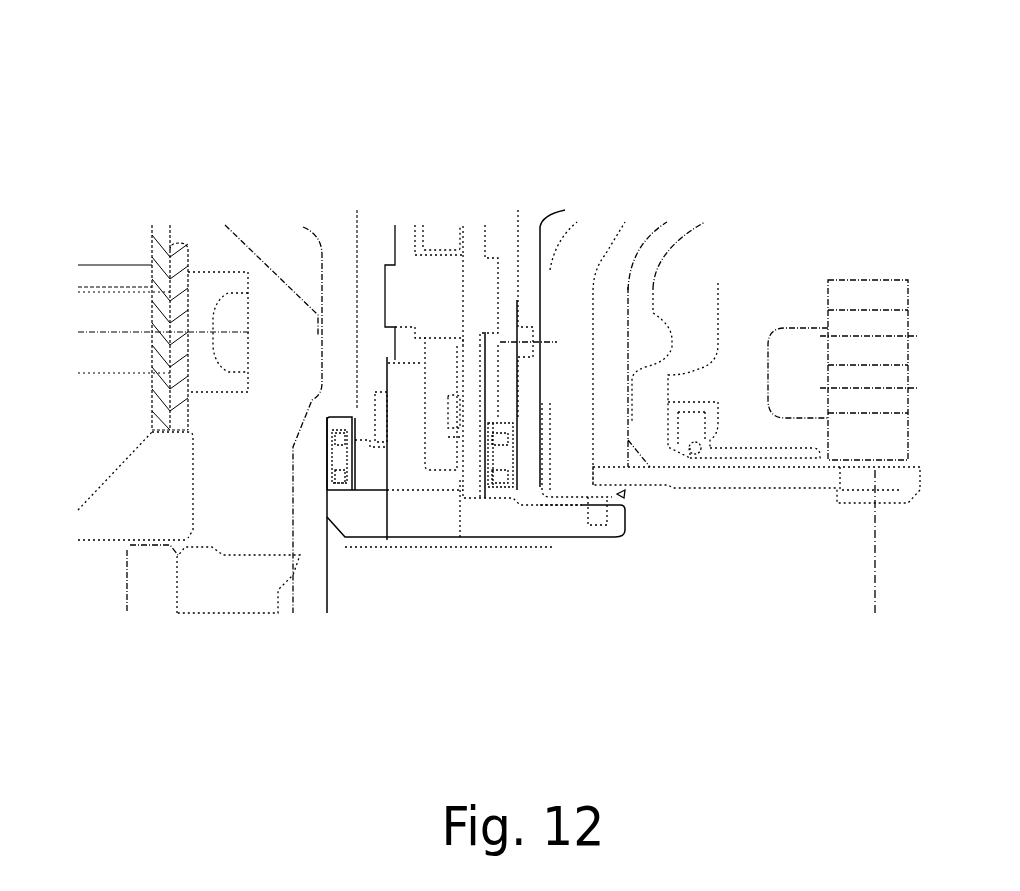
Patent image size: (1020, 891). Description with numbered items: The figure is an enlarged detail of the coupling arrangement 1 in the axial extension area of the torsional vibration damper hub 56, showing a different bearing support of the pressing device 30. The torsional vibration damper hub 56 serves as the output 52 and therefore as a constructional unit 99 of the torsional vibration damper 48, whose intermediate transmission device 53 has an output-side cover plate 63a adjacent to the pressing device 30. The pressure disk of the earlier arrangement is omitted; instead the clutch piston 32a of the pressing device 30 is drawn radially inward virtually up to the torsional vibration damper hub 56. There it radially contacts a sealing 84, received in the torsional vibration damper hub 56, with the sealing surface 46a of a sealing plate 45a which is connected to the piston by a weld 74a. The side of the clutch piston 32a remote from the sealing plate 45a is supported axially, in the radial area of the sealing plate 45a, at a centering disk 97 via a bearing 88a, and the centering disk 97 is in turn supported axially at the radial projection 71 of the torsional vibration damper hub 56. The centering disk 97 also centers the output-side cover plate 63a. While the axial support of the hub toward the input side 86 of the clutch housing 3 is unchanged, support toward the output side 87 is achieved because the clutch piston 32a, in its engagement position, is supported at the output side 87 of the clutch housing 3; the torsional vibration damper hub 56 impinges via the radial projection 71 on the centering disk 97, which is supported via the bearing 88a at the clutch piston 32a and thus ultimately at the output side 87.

The coupling arrangement 1 is at (576, 128).
The clutch housing 3 is at (333, 242).
The pressing device 30 is at (543, 383).
The clutch piston 32a is at (527, 310).
The sealing plate 45a is at (624, 494).
The sealing surface 46a is at (570, 492).
The torsional vibration damper 48 is at (449, 215).
The output 52 is at (443, 528).
The intermediate transmission device 53 is at (396, 349).
The torsional vibration damper hub 56 is at (547, 518).
The output-side cover plate 63a is at (473, 390).
The radial projection 71 is at (462, 480).
The weld 74a is at (521, 450).
The sealing 84 is at (597, 525).
The input side 86 is at (344, 285).
The output side 87 is at (628, 263).
The bearing 88a is at (502, 458).
The centering disk 97 is at (473, 450).
The constructional unit 99 is at (487, 520).